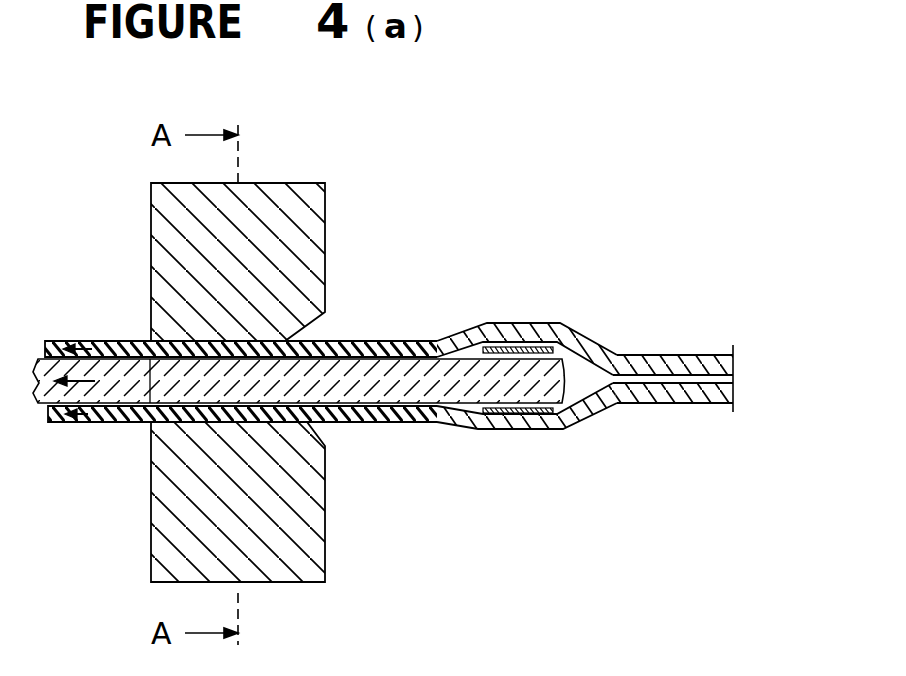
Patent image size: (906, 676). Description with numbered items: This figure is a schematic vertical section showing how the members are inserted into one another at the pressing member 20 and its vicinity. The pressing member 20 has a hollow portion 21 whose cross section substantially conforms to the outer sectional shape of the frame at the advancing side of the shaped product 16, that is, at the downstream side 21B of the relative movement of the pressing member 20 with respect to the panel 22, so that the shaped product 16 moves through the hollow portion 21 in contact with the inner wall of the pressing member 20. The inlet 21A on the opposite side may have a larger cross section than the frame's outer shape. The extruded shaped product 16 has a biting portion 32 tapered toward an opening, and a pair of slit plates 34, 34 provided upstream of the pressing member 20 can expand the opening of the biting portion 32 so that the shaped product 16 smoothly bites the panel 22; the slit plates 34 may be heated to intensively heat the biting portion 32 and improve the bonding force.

The pressing member 20 is at (327, 222).
The hollow portion 21 is at (323, 383).
The inlet 21A is at (361, 414).
The downstream side 21B is at (115, 422).
The panel 22 is at (430, 395).
The shaped product 16 is at (546, 318).
The biting portion 32 is at (677, 384).
The slit plates 34 is at (523, 325).